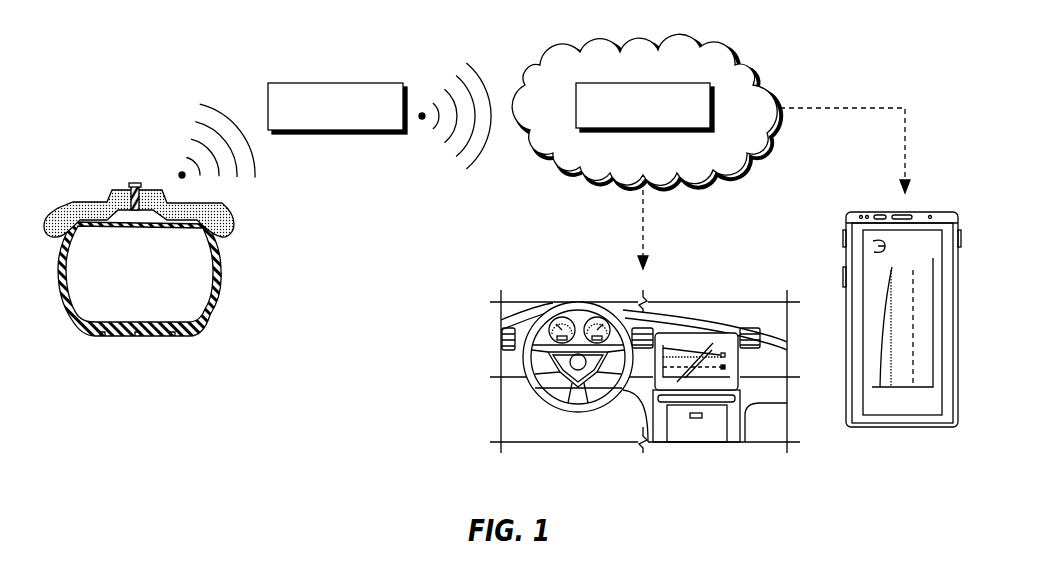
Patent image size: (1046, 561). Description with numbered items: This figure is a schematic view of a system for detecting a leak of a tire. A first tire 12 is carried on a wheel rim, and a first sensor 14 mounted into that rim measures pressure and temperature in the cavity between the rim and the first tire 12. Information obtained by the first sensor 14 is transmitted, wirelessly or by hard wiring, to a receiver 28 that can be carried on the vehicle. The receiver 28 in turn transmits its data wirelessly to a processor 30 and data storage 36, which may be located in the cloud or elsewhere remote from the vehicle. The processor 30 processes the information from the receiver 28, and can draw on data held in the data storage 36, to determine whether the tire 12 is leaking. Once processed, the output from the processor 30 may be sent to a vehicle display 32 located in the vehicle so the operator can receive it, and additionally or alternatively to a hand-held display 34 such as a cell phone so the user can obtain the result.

The first tire 12 is at (223, 272).
The first sensor 14 is at (133, 183).
The receiver 28 is at (290, 83).
The processor 30 is at (626, 83).
The vehicle display 32 is at (718, 337).
The hand-held display 34 is at (870, 260).
The data storage 36 is at (672, 42).